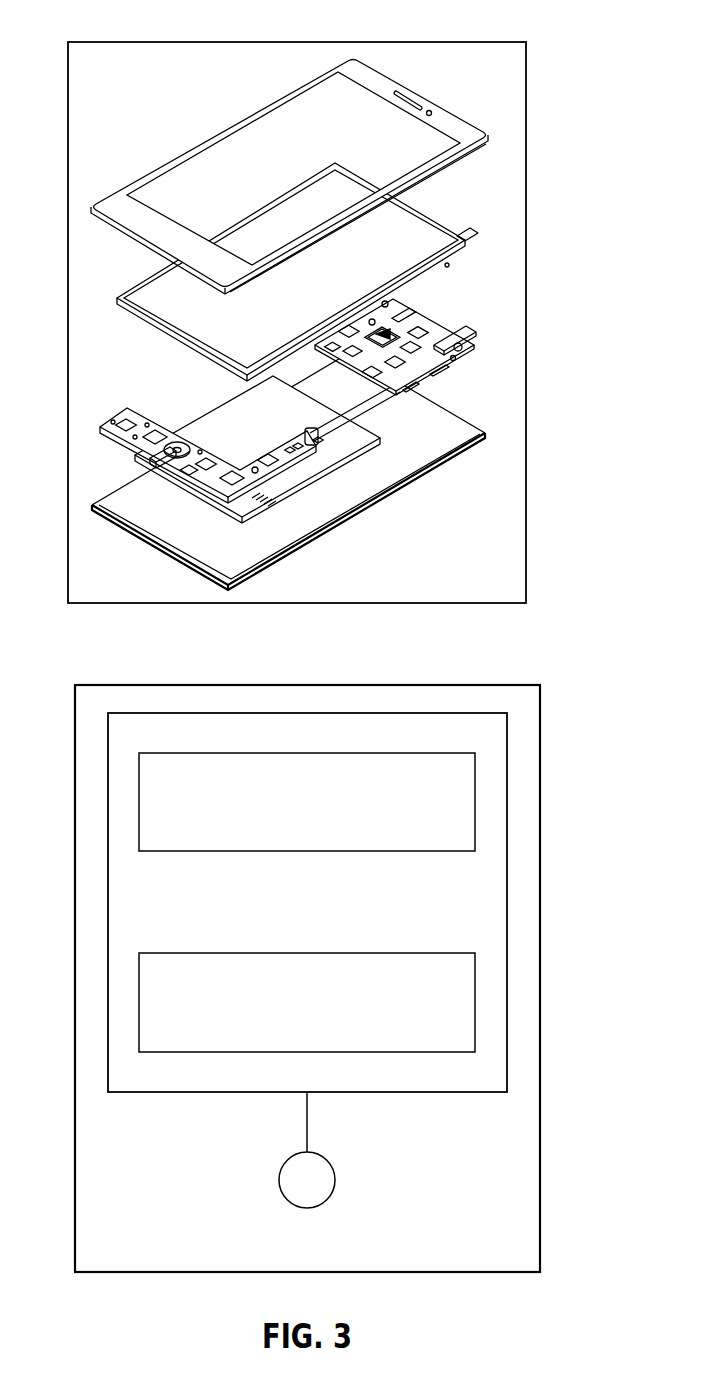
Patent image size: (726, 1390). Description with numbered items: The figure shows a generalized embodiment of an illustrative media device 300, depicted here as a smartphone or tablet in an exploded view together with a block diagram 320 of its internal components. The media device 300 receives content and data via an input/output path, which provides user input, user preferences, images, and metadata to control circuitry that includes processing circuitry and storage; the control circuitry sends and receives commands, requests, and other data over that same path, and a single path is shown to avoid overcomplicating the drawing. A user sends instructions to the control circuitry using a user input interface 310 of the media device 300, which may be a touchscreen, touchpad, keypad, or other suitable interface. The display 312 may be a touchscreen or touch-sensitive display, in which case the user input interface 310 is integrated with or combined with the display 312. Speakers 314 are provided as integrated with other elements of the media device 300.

The media device 300 is at (139, 38).
The user input interface 310 is at (289, 147).
The display 312 is at (425, 238).
The speakers 314 is at (409, 98).
The device block diagram 320 is at (343, 681).